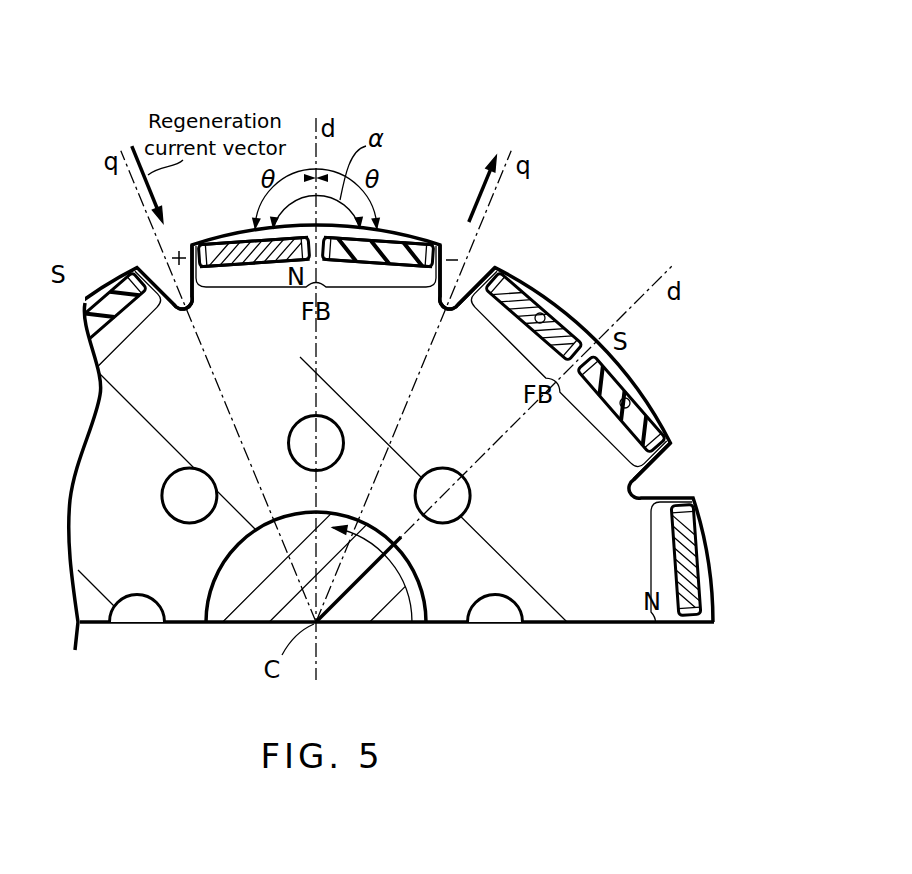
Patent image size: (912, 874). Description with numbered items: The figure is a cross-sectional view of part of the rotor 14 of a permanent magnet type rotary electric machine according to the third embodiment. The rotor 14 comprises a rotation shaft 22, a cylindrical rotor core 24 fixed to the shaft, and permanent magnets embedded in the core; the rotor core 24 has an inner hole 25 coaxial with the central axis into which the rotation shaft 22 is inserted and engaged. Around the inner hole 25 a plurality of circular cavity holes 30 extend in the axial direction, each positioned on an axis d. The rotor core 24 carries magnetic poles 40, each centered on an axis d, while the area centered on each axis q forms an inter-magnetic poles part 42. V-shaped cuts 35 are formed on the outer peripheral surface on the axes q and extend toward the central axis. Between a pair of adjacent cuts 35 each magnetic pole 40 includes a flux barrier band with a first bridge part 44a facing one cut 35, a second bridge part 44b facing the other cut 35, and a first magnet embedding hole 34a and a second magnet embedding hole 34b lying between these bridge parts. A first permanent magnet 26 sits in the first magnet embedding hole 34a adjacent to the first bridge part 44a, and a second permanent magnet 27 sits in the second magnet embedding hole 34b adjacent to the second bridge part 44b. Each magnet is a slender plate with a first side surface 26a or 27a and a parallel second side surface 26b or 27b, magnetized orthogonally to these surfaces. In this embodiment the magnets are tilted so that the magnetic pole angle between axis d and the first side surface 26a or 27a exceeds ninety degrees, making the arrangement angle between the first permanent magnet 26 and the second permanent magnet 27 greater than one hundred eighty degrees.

The rotor 14 is at (710, 421).
The rotation shaft 22 is at (368, 605).
The rotor core 24 is at (585, 607).
The inner hole 25 is at (217, 603).
The first permanent magnet 26 is at (213, 258).
The first side surface 26a is at (247, 237).
The second side surface 26b is at (268, 262).
The second permanent magnet 27 is at (400, 255).
The first side surface 27a is at (410, 247).
The second side surface 27b is at (350, 262).
The cavity hole 30 is at (178, 497).
The first magnet embedding hole 34a is at (545, 318).
The second magnet embedding hole 34b is at (630, 404).
The cut 35 is at (157, 283).
The magnetic pole 40 is at (437, 77).
The inter-magnetic poles part 42 is at (187, 89).
The first bridge part 44a is at (190, 248).
The second bridge part 44b is at (442, 247).